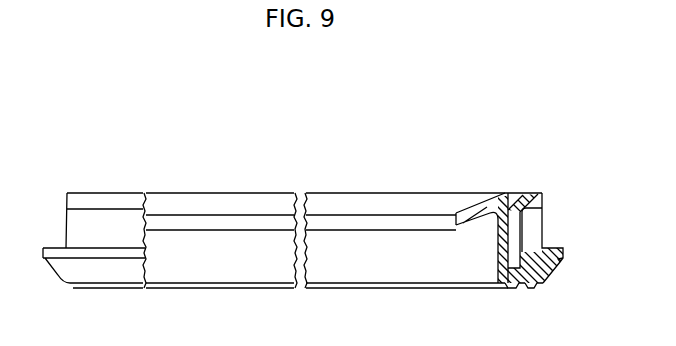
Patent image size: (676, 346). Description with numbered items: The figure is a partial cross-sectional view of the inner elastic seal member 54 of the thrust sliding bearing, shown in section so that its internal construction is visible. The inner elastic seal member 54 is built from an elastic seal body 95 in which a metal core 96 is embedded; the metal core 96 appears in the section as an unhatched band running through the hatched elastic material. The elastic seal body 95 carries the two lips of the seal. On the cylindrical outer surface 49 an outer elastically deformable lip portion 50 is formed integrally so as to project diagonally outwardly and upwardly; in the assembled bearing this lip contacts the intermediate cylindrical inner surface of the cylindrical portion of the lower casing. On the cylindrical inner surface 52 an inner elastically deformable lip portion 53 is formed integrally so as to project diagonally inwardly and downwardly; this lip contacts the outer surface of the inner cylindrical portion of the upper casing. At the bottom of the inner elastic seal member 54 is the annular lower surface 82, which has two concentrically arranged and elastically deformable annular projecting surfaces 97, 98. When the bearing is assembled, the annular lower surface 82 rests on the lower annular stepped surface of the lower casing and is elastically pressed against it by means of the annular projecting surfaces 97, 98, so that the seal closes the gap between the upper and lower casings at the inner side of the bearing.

The cylindrical outer surface 49 is at (542, 225).
The outer elastically deformable lip portion 50 is at (562, 260).
The cylindrical inner surface 52 is at (498, 254).
The inner elastically deformable lip portion 53 is at (460, 216).
The inner elastic seal member 54 is at (85, 191).
The annular lower surface 82 is at (408, 289).
The elastic seal body 95 is at (502, 222).
The metal core 96 is at (530, 200).
The annular projecting surface 97 is at (513, 287).
The annular projecting surface 98 is at (533, 287).